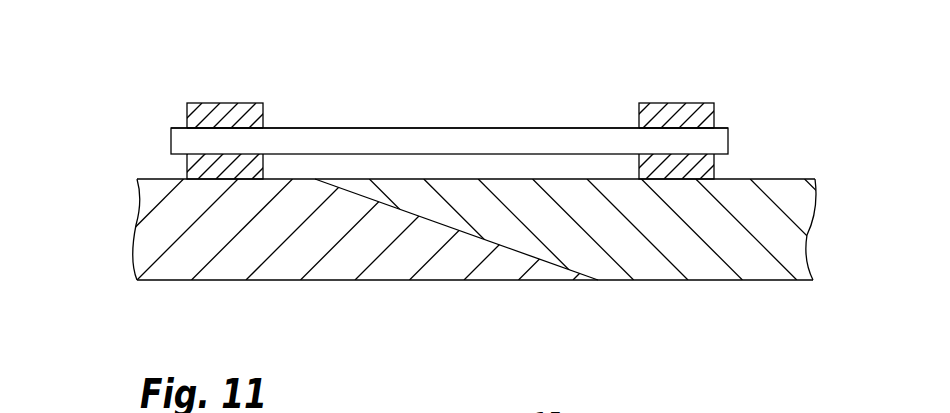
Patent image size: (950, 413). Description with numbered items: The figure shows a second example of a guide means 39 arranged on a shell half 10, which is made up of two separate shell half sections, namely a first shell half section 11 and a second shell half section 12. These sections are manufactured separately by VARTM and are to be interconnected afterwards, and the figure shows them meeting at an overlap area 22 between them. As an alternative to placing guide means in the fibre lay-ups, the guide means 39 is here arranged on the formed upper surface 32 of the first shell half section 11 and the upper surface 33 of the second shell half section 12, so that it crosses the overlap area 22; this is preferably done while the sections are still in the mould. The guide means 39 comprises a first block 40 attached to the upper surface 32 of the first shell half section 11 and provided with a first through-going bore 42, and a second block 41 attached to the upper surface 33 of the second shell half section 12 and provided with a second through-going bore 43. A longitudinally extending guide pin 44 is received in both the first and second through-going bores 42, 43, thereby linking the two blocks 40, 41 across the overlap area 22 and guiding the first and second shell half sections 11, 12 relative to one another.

The shell half 10 is at (822, 251).
The first shell half section 11 is at (220, 263).
The second shell half section 12 is at (731, 255).
The overlap area 22 is at (462, 242).
The upper surface of the first shell half section 32 is at (150, 179).
The upper surface of the second shell half section 33 is at (777, 179).
The guide means 39 is at (502, 110).
The first block 40 is at (198, 103).
The second block 41 is at (673, 115).
The first through-going bore 42 is at (264, 140).
The second through-going bore 43 is at (653, 140).
The guide pin 44 is at (428, 140).